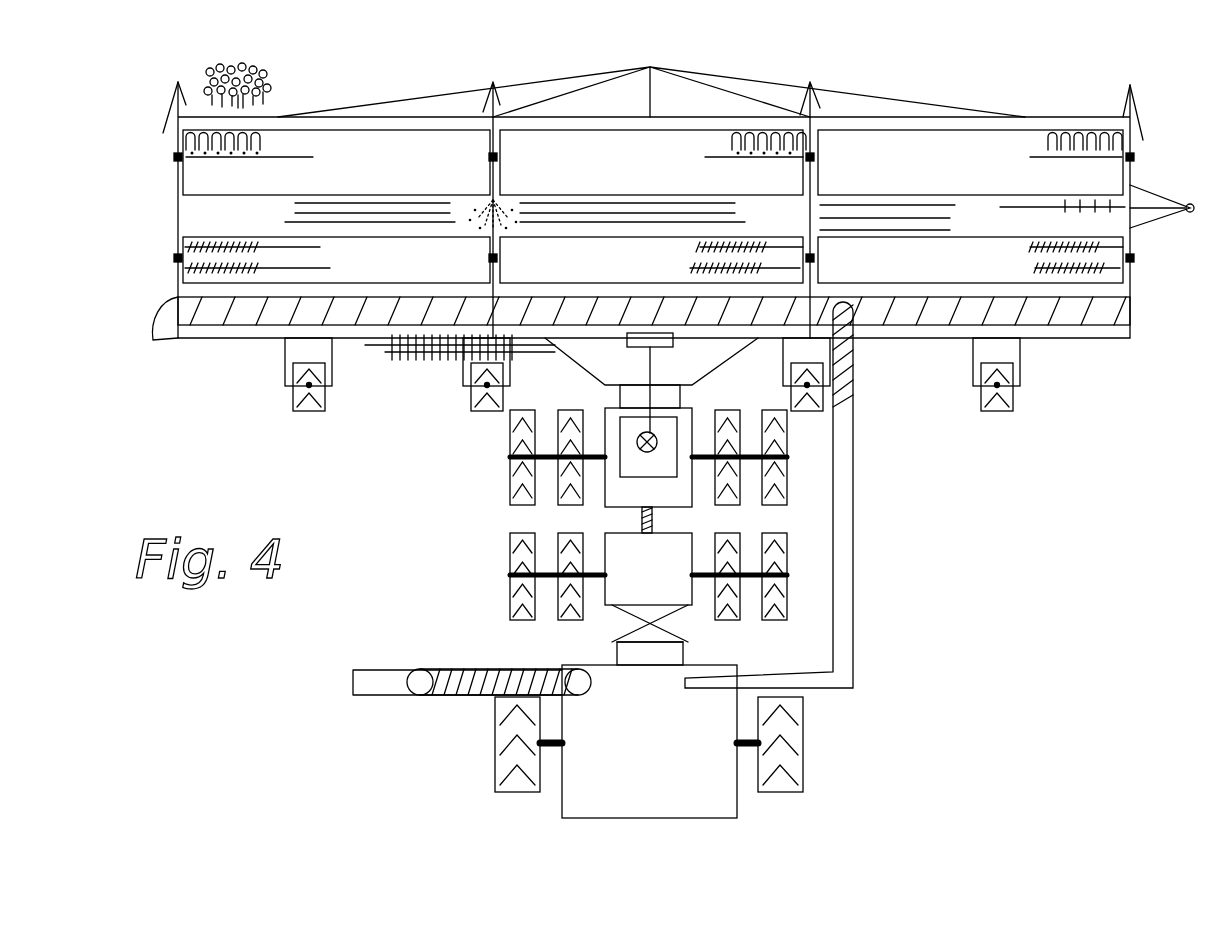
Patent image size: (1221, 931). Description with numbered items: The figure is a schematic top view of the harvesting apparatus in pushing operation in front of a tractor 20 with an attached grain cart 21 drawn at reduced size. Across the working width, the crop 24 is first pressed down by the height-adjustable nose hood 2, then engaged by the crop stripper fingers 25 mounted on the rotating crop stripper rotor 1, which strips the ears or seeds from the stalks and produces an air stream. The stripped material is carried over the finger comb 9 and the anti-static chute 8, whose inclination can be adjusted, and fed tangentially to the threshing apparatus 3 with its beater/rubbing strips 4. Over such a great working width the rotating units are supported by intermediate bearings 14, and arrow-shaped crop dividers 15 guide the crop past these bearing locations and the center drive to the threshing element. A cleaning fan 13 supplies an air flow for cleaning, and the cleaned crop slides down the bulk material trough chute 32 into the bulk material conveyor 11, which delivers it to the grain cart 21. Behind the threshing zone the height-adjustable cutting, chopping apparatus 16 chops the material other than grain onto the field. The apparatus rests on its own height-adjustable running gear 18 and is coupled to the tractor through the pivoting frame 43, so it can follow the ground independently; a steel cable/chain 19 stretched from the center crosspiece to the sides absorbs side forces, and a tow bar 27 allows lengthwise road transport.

The crop stripper rotor 1 is at (653, 162).
The nose hood 2 is at (1052, 118).
The threshing apparatus 3 is at (653, 260).
The beater/rubbing strips 4 is at (315, 270).
The chute 8 is at (230, 216).
The finger comb 9 is at (1060, 203).
The bulk material conveyor 11 is at (1070, 315).
The cleaning fan 13 is at (865, 218).
The bearings 14 is at (500, 258).
The crop dividers 15 is at (800, 213).
The cutting, chopping apparatus 16 is at (432, 355).
The running gear 18 is at (330, 362).
The steel cable/chain 19 is at (676, 78).
The tractor 20 is at (620, 497).
The grain cart 21 is at (605, 675).
The crop 24 is at (295, 83).
The crop stripper fingers 25 is at (183, 148).
The tow bar 27 is at (1160, 235).
The bulk material trough chute 32 is at (192, 330).
The pivoting frame 43 is at (657, 348).